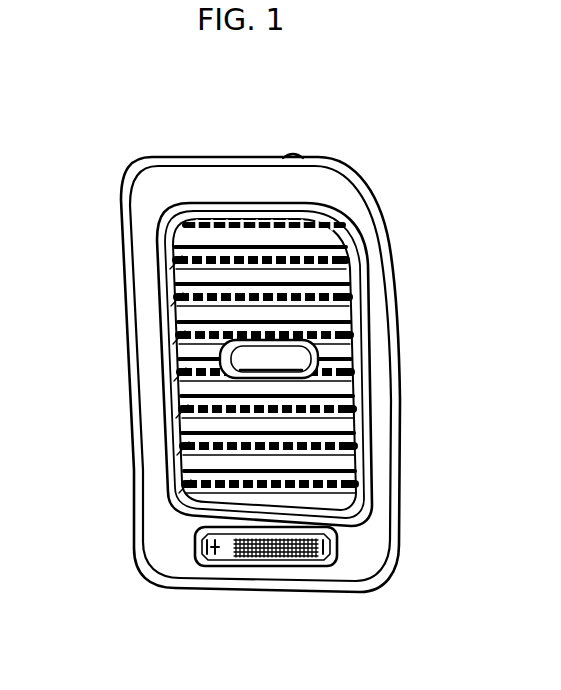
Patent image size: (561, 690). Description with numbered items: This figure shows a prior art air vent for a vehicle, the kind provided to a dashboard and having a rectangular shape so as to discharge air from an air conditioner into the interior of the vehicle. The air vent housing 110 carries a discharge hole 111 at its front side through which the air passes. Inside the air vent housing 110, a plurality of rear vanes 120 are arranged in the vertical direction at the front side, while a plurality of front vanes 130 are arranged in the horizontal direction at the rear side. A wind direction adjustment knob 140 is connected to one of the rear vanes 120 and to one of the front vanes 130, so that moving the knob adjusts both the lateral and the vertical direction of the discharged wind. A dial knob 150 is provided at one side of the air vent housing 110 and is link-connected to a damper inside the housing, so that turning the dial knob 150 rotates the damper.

The air vent housing 110 is at (333, 190).
The discharge hole 111 is at (185, 425).
The rear vane 120 is at (327, 323).
The front vane 130 is at (245, 298).
The wind direction adjustment knob 140 is at (286, 382).
The dial knob 150 is at (285, 566).